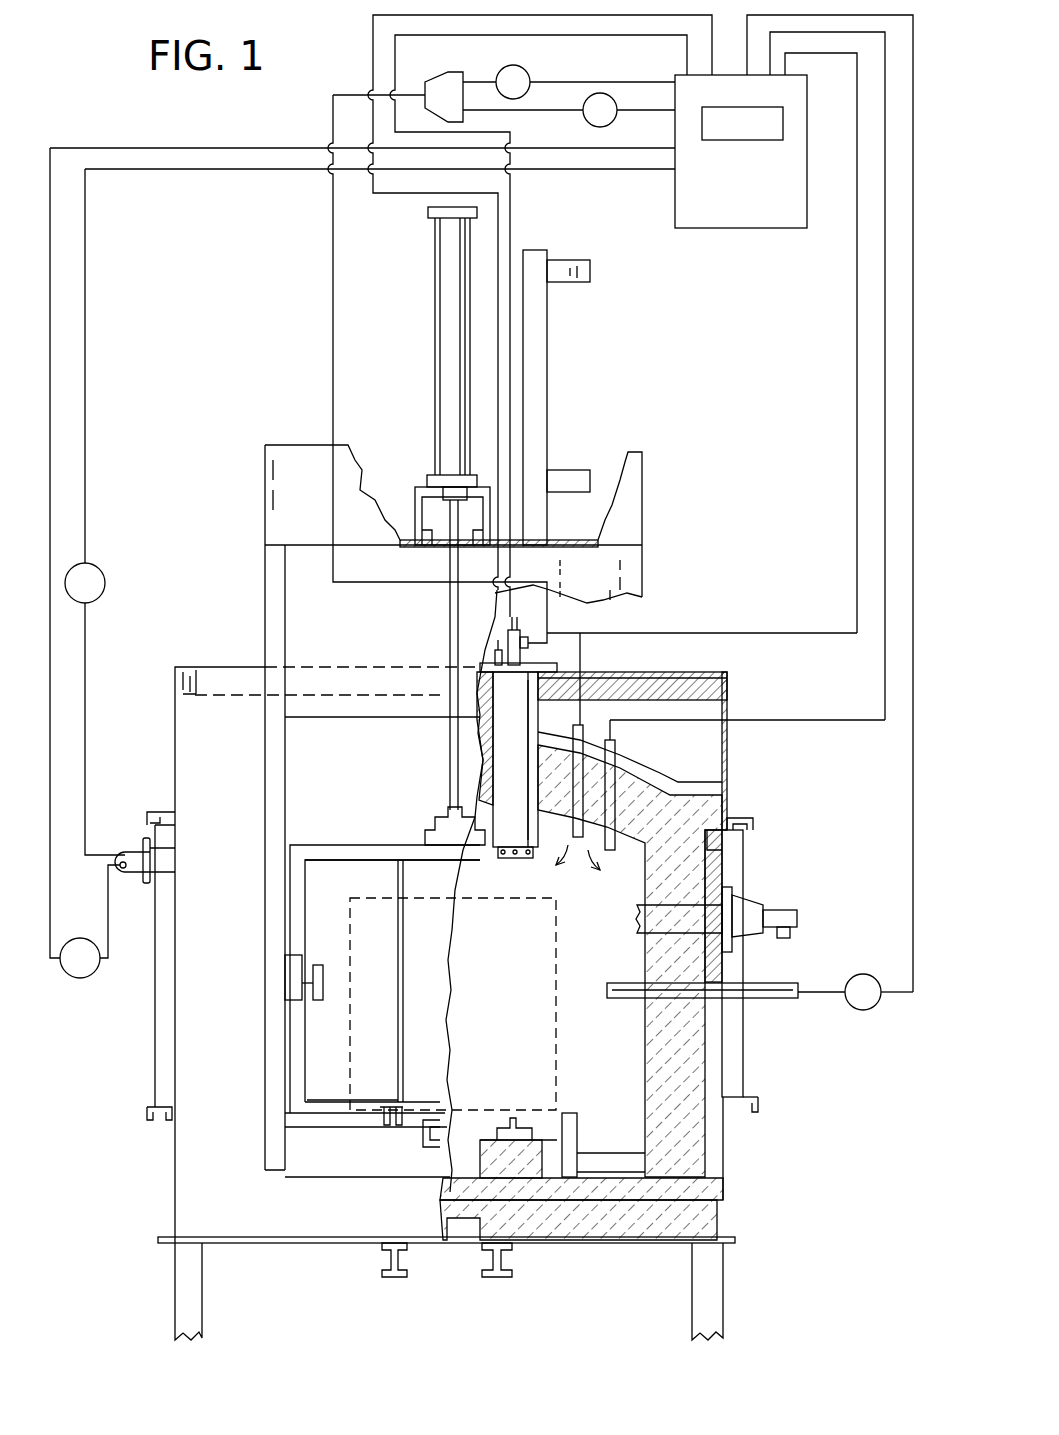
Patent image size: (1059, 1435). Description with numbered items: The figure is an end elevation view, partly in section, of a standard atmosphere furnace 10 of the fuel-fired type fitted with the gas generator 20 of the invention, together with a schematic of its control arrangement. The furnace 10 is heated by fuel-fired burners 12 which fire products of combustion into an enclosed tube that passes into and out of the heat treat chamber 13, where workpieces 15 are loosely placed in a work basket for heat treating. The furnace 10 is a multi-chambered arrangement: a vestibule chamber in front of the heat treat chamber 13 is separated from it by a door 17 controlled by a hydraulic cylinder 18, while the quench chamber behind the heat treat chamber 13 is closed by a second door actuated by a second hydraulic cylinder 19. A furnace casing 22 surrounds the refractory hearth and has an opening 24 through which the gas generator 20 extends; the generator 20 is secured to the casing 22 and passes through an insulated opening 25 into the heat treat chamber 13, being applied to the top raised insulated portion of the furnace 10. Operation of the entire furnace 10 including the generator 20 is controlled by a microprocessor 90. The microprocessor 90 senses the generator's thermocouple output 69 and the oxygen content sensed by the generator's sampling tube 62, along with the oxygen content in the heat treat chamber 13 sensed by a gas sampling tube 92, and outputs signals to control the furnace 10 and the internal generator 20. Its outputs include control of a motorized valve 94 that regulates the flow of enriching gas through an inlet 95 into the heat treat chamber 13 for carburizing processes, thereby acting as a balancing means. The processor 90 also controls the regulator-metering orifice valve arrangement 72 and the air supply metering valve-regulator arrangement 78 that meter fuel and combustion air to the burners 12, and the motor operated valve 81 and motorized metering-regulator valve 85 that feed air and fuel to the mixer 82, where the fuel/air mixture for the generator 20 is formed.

The atmosphere furnace 10 is at (733, 1168).
The fuel-fired burners 12 is at (760, 900).
The heat treat chamber 13 is at (511, 955).
The workpieces 15 is at (556, 1025).
The door 17 is at (305, 1025).
The hydraulic cylinder 18 is at (435, 362).
The second hydraulic cylinder 19 is at (547, 375).
The gas generator 20 is at (490, 848).
The furnace casing 22 is at (691, 662).
The opening 24 is at (530, 662).
The insulated opening 25 is at (538, 690).
The sampling tube 62 is at (510, 218).
The thermocouple output 69 is at (498, 296).
The regulator-metering orifice valve arrangement 72 is at (88, 978).
The air supply metering valve-regulator arrangement 78 is at (118, 553).
The motor operated valve 81 is at (525, 70).
The mixer 82 is at (455, 85).
The motorized metering-regulator valve 85 is at (615, 122).
The microprocessor 90 is at (745, 228).
The gas sampling tube 92 is at (645, 770).
The motorized valve 94 is at (880, 945).
The inlet 95 is at (770, 1000).